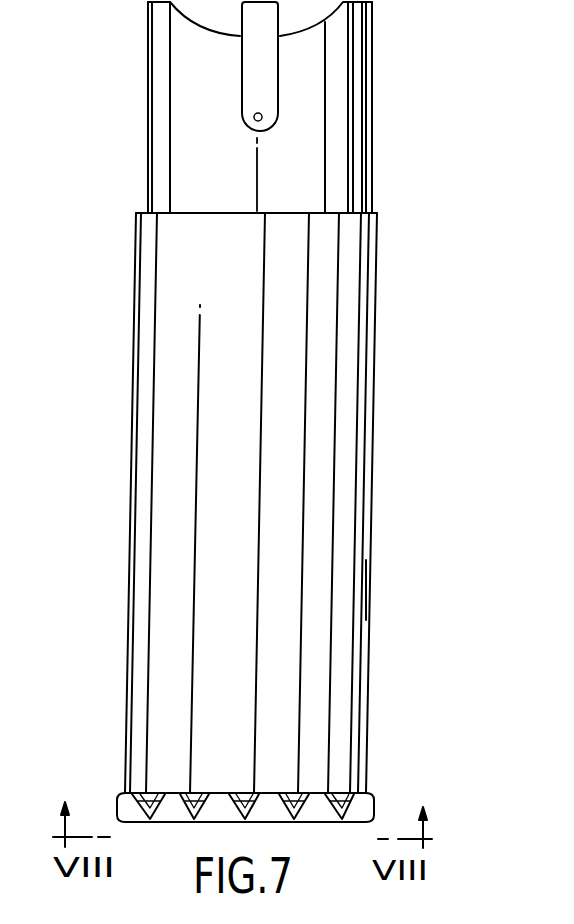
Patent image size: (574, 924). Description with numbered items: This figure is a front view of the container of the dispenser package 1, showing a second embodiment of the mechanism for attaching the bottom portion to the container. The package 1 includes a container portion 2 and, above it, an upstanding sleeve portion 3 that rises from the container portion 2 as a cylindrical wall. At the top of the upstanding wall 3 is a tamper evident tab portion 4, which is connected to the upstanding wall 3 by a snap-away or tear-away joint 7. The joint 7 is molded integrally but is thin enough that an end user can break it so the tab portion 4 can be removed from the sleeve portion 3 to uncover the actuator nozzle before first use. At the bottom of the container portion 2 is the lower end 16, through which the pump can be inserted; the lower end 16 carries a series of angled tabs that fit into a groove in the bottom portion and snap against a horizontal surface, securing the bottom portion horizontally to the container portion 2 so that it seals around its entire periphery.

The package 1 is at (422, 351).
The container portion 2 is at (368, 587).
The upstanding sleeve portion 3 is at (374, 58).
The tamper evident tab portion 4 is at (246, 118).
The snap-away or tear-away joint 7 is at (273, 128).
The lower end 16 is at (112, 808).